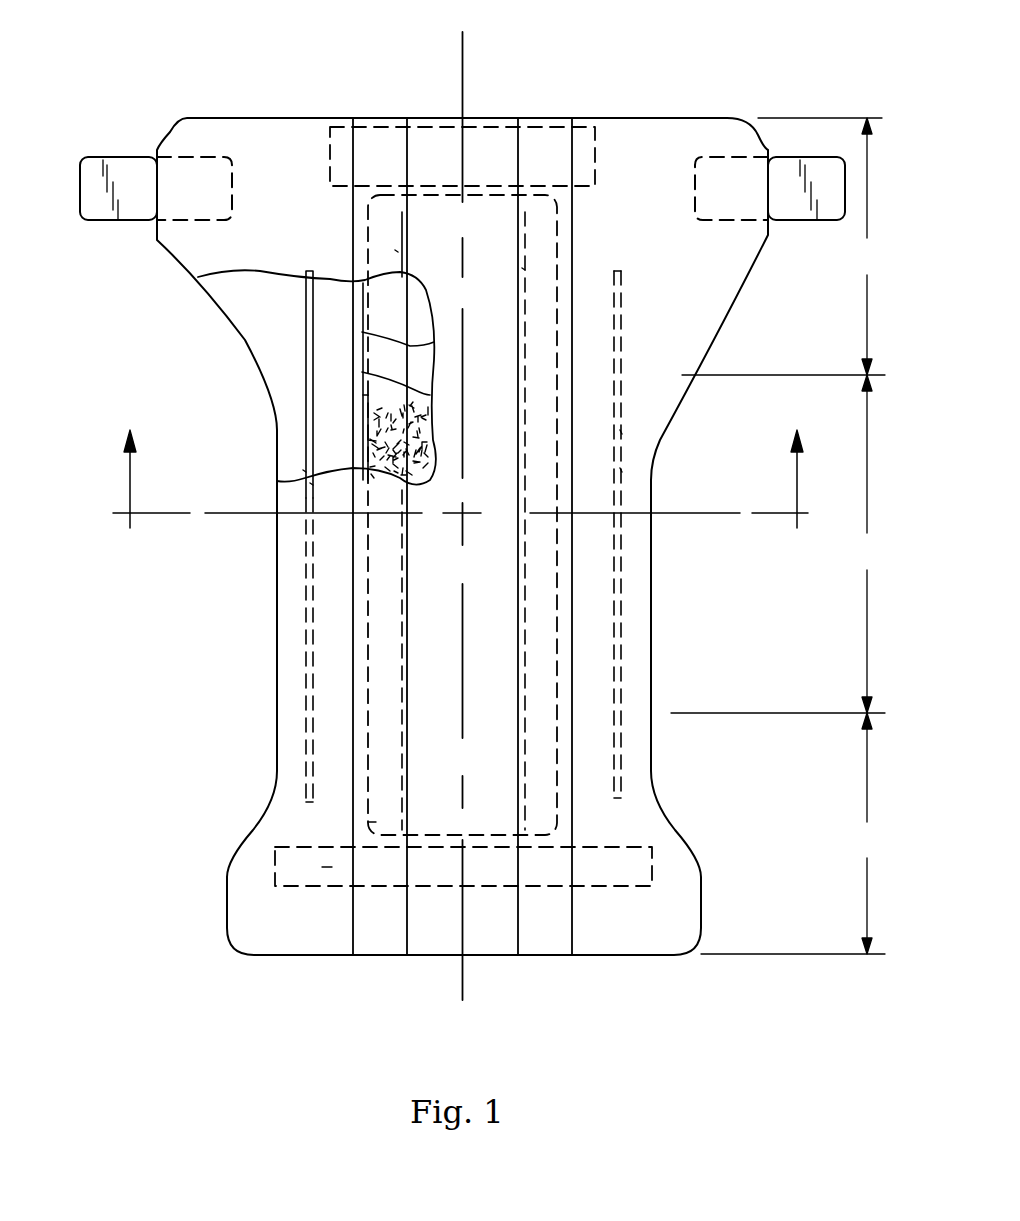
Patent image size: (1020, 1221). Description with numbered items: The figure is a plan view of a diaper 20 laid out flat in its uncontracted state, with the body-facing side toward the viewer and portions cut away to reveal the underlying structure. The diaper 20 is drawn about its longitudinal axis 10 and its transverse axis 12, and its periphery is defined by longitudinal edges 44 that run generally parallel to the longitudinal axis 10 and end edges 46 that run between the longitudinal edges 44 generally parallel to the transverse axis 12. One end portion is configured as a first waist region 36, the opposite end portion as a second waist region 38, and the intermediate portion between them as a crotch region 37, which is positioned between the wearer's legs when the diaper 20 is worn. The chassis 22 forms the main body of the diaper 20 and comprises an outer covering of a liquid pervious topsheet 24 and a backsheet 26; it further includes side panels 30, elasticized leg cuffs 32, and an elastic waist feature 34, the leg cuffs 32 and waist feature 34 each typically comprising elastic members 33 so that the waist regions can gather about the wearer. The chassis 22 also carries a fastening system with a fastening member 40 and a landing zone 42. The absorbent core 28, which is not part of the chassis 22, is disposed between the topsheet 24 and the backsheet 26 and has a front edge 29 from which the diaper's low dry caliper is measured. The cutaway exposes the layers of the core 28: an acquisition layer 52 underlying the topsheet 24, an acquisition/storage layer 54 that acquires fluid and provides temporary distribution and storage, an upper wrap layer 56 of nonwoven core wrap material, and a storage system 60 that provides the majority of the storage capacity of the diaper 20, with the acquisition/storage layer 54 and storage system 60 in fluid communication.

The longitudinal axis 10 is at (464, 992).
The transverse axis 12 is at (662, 513).
The diaper 20 is at (735, 92).
The chassis 22 is at (500, 680).
The topsheet 24 is at (427, 692).
The backsheet 26 is at (258, 326).
The absorbent core 28 is at (362, 418).
The front edge 29 is at (372, 822).
The side panels 30 is at (236, 166).
The elasticized leg cuffs 32 is at (356, 648).
The elastic members 33 is at (395, 251).
The elastic waist feature 34 is at (485, 155).
The first waist region 36 is at (793, 833).
The crotch region 37 is at (778, 544).
The second waist region 38 is at (783, 246).
The fastening member 40 is at (133, 168).
The landing zone 42 is at (327, 867).
The longitudinal edges 44 is at (277, 746).
The end edges 46 is at (380, 118).
The acquisition layer 52 is at (393, 308).
The acquisition/storage layer 54 is at (377, 349).
The upper wrap layer 56 is at (370, 379).
The storage system 60 is at (375, 441).